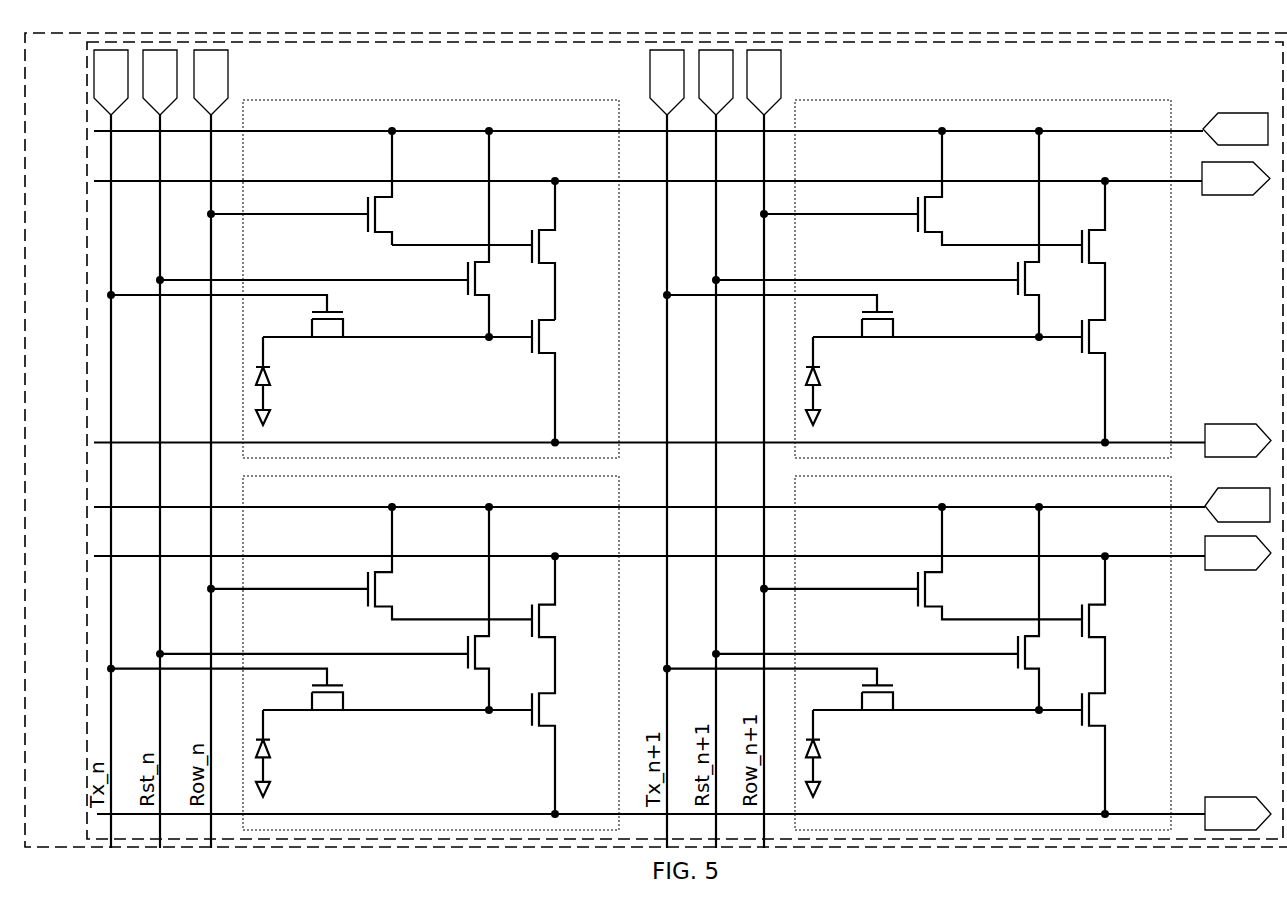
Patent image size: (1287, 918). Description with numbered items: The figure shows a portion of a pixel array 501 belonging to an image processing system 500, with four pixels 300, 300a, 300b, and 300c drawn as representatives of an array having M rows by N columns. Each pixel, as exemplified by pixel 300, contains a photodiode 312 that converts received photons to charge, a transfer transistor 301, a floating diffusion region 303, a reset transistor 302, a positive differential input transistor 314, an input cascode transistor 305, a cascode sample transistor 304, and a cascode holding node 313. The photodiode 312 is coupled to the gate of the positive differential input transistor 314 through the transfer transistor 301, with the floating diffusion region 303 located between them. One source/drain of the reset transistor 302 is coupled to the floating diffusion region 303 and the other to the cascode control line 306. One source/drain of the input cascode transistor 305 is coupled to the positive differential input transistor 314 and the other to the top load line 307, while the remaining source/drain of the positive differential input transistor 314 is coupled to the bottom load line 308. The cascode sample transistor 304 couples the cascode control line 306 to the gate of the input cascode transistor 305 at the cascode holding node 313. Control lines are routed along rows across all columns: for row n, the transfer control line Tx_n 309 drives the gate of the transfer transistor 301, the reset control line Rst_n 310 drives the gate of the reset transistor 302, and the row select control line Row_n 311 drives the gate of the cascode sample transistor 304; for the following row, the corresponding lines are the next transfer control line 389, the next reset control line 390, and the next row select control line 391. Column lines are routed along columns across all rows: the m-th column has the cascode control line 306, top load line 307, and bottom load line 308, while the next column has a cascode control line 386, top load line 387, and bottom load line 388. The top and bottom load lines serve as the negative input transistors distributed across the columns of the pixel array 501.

The image processing system 500 is at (81, 76).
The pixel array 501 is at (358, 76).
The pixel 300 is at (300, 125).
The pixel 300a is at (855, 126).
The pixel 300b is at (311, 501).
The pixel 300c is at (854, 501).
The transfer transistor 301 is at (327, 325).
The reset transistor 302 is at (484, 280).
The floating diffusion region 303 is at (496, 341).
The cascode sample transistor 304 is at (383, 212).
The input cascode transistor 305 is at (561, 251).
The cascode control line 306 is at (1228, 139).
The top load line 307 is at (1212, 188).
The bottom load line 308 is at (1215, 450).
The transfer control line Tx_n 309 is at (121, 57).
The reset control line Rst_n 310 is at (170, 57).
The row select control line Row_n 311 is at (221, 57).
The photodiode 312 is at (272, 385).
The cascode holding node 313 is at (514, 238).
The positive differential input transistor 314 is at (546, 340).
The cascode control line 386 is at (1229, 515).
The top load line 387 is at (1215, 563).
The bottom load line 388 is at (1215, 824).
The transfer control line Tx_n+1 389 is at (677, 57).
The reset control line Rst_n+1 390 is at (726, 57).
The row select control line Row_n+1 391 is at (774, 57).